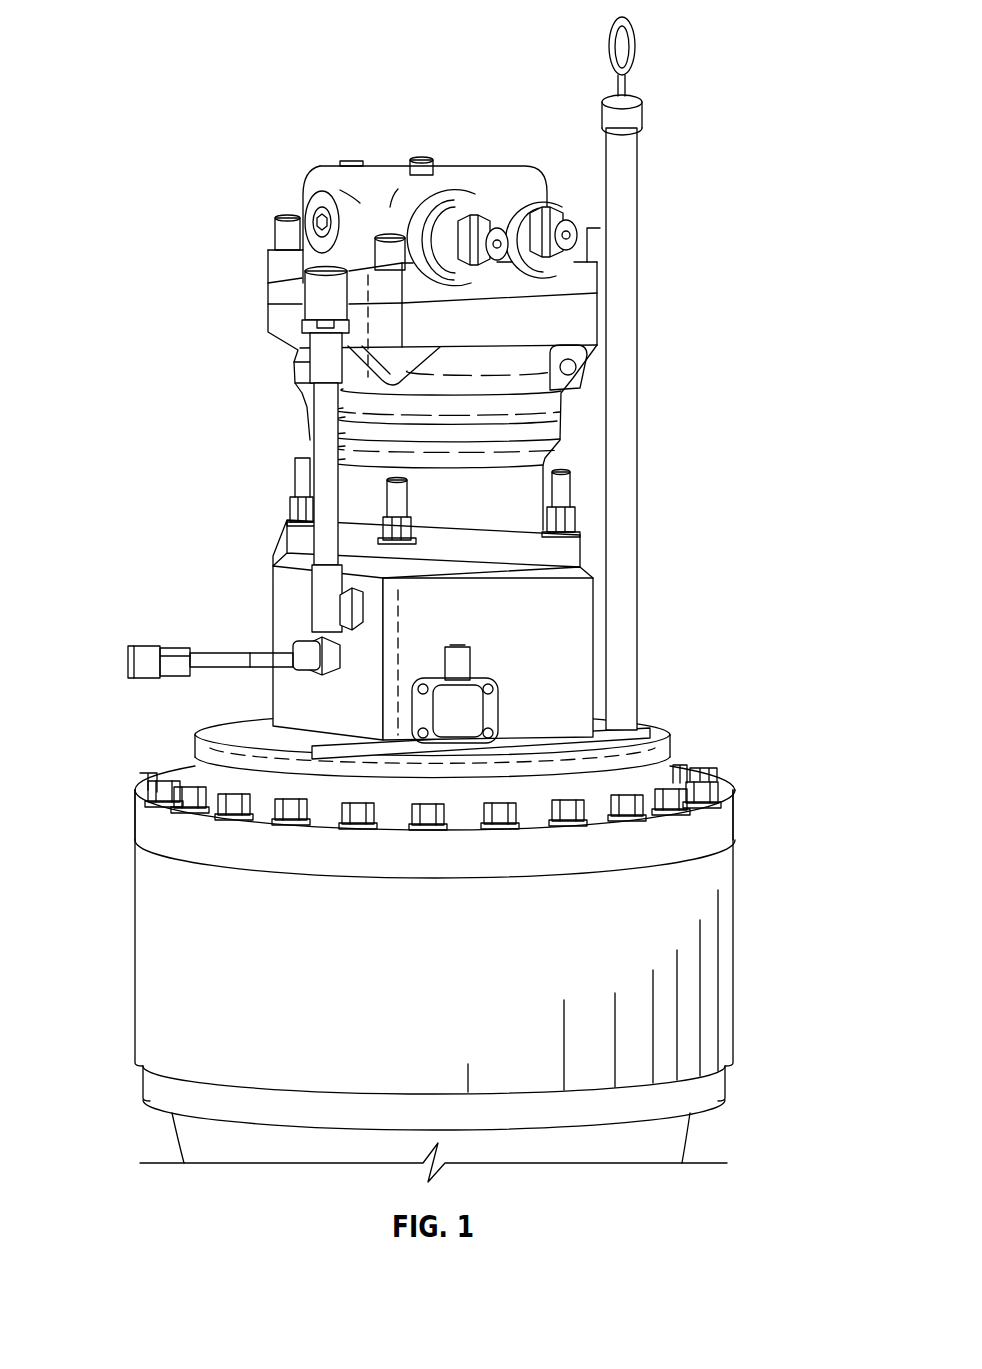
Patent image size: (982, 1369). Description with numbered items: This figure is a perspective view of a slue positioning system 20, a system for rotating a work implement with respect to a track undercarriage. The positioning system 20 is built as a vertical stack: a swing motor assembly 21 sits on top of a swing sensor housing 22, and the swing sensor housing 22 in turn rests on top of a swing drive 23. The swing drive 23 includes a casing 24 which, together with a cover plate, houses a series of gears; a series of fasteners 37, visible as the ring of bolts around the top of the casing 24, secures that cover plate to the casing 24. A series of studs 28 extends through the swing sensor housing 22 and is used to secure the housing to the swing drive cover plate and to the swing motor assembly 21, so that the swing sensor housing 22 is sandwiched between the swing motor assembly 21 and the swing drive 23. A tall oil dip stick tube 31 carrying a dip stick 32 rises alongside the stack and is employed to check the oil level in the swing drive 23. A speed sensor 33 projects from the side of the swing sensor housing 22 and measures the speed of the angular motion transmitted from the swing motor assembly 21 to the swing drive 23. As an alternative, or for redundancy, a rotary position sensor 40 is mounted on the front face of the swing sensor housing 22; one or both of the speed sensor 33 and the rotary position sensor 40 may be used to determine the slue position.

The slue positioning system 20 is at (717, 648).
The swing motor assembly 21 is at (200, 373).
The swing sensor housing 22 is at (600, 665).
The swing drive 23 is at (737, 975).
The casing 24 is at (136, 962).
The studs 28 is at (300, 468).
The oil dip stick tube 31 is at (630, 173).
The dip stick 32 is at (624, 82).
The speed sensor 33 is at (237, 650).
The fasteners 37 is at (138, 789).
The rotary position sensor 40 is at (477, 712).